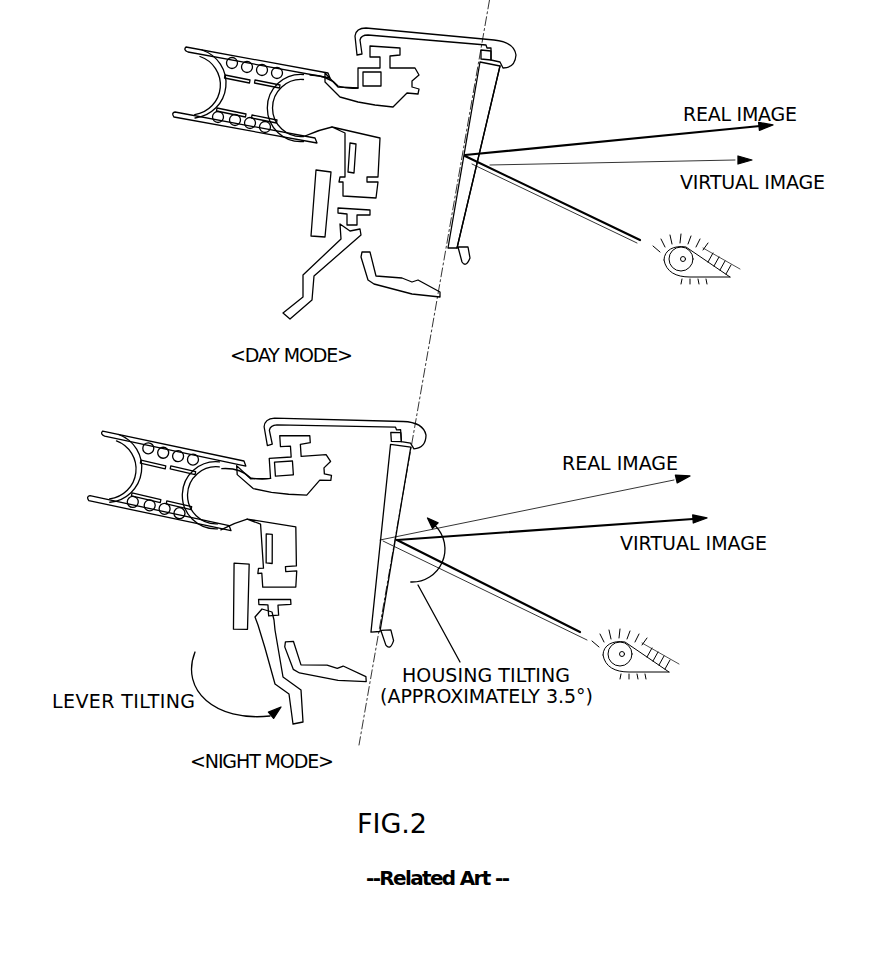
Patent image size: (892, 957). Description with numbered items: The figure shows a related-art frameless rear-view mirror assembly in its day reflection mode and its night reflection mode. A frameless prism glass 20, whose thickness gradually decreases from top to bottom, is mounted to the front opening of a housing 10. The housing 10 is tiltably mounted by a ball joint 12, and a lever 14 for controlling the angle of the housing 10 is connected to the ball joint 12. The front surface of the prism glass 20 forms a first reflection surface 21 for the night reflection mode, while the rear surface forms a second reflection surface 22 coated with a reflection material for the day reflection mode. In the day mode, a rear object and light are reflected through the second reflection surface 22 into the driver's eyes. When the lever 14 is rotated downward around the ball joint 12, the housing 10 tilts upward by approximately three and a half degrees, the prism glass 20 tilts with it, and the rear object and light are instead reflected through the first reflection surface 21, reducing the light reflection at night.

The housing 10 is at (317, 206).
The ball joint 12 is at (286, 139).
The lever 14 is at (303, 282).
The prism glass 20 is at (493, 98).
The first reflection surface 21 is at (488, 126).
The second reflection surface 22 is at (477, 188).